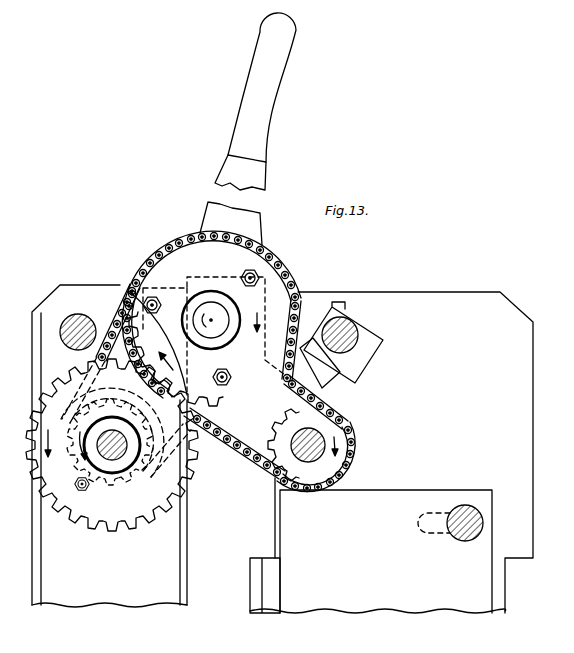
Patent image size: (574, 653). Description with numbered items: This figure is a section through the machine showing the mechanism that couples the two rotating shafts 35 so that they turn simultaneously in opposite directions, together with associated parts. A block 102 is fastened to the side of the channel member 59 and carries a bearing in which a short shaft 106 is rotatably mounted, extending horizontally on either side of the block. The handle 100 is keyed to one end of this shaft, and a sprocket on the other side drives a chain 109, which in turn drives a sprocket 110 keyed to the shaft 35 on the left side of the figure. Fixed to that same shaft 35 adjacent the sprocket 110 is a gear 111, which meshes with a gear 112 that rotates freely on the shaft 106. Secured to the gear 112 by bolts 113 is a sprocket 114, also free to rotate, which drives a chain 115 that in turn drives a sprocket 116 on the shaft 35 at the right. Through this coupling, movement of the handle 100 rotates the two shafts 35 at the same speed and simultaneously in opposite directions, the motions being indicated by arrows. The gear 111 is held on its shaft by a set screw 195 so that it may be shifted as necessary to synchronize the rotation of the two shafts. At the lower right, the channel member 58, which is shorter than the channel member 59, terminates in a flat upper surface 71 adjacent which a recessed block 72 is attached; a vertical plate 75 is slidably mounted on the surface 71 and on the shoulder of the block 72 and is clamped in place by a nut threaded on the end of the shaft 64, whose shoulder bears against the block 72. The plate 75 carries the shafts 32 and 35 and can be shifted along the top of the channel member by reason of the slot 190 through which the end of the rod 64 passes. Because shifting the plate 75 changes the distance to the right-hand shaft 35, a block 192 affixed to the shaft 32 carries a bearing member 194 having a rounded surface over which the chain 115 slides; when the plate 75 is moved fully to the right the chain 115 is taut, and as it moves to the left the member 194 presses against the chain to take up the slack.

The handle 100 is at (265, 108).
The chain 115 is at (150, 250).
The sprocket 114 is at (277, 283).
The chain 109 is at (123, 300).
The bolts 113 is at (155, 300).
The block 102 is at (207, 277).
The short shaft 106 is at (222, 322).
The shaft 32 is at (83, 320).
The gear 112 is at (176, 349).
The sprocket 110 is at (135, 417).
The shaft 35 is at (114, 457).
The set screw 195 is at (82, 488).
The gear 111 is at (105, 515).
The channel member 59 is at (47, 546).
The sprocket 116 is at (327, 427).
The block 192 is at (362, 358).
The bearing member 194 is at (343, 372).
The vertical plate 75 is at (526, 417).
The flat upper surface 71 is at (268, 560).
The channel member 58 is at (263, 587).
The recessed block 72 is at (442, 603).
The slot 190 is at (427, 537).
The shaft 64 is at (465, 542).